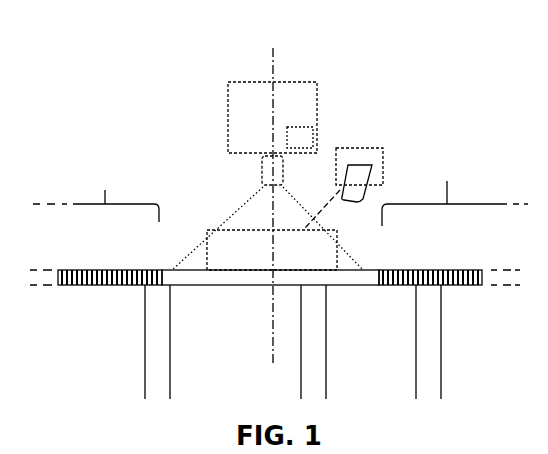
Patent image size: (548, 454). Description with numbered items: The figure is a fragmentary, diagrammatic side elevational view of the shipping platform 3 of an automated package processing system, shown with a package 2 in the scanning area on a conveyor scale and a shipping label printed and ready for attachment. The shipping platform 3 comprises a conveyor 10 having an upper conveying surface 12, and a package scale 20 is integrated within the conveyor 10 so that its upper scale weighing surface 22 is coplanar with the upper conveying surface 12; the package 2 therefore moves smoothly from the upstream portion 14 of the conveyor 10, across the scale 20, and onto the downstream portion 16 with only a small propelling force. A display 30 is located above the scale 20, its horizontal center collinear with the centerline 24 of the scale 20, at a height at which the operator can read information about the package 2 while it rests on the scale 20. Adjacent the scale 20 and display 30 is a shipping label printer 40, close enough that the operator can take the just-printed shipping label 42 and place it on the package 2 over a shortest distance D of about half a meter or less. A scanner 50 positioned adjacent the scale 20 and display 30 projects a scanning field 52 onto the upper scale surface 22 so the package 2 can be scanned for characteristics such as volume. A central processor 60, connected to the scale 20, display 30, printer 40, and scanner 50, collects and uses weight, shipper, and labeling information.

The package 2 is at (243, 265).
The shipping platform 3 is at (187, 76).
The conveyor 10 is at (108, 286).
The upper conveying surface 12 is at (149, 270).
The upstream portion 14 is at (96, 188).
The downstream portion 16 is at (455, 191).
The package scale 20 is at (243, 276).
The upper scale weighing surface 22 is at (379, 270).
The centerline 24 is at (273, 355).
The display 30 is at (260, 108).
The shipping label printer 40 is at (376, 147).
The printed shipping label 42 is at (368, 177).
The scanner 50 is at (261, 170).
The projected scanning field 52 is at (240, 204).
The central processor 60 is at (311, 148).
The shortest distance D is at (323, 208).